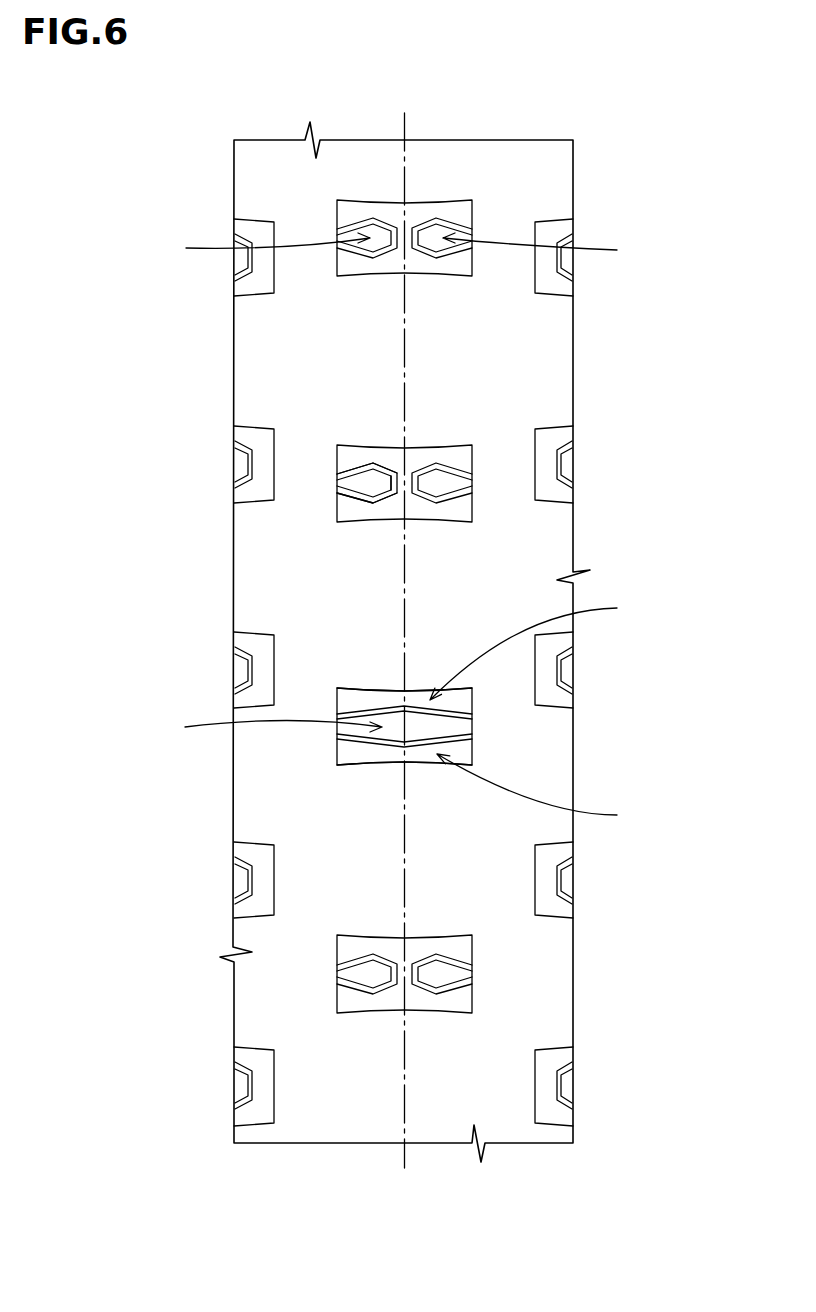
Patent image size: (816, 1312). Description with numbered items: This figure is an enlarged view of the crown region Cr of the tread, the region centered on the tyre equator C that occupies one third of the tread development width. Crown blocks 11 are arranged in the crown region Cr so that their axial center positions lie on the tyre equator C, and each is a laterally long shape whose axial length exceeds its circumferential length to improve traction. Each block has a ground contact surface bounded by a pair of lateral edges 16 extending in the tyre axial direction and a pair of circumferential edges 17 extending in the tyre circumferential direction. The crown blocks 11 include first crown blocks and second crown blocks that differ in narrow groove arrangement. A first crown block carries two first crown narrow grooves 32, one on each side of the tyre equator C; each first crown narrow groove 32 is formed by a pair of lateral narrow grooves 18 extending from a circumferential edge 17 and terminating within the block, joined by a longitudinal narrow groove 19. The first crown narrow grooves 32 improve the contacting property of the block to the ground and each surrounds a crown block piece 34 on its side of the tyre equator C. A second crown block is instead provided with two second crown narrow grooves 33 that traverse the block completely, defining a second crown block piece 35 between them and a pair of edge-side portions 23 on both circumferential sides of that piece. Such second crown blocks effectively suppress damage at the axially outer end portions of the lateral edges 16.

The crown block 11 is at (420, 452).
The lateral edge 16 is at (367, 688).
The circumferential edge 17 is at (337, 264).
The lateral narrow groove 18 is at (355, 465).
The longitudinal narrow groove 19 is at (392, 484).
The edge-side portion 23 is at (543, 712).
The first crown narrow groove 32 is at (355, 221).
The second crown narrow groove 33 is at (367, 710).
The crown block piece 34 is at (402, 249).
The second crown block piece 35 is at (264, 727).
The tyre equator C is at (404, 627).
The crown region Cr is at (438, 178).